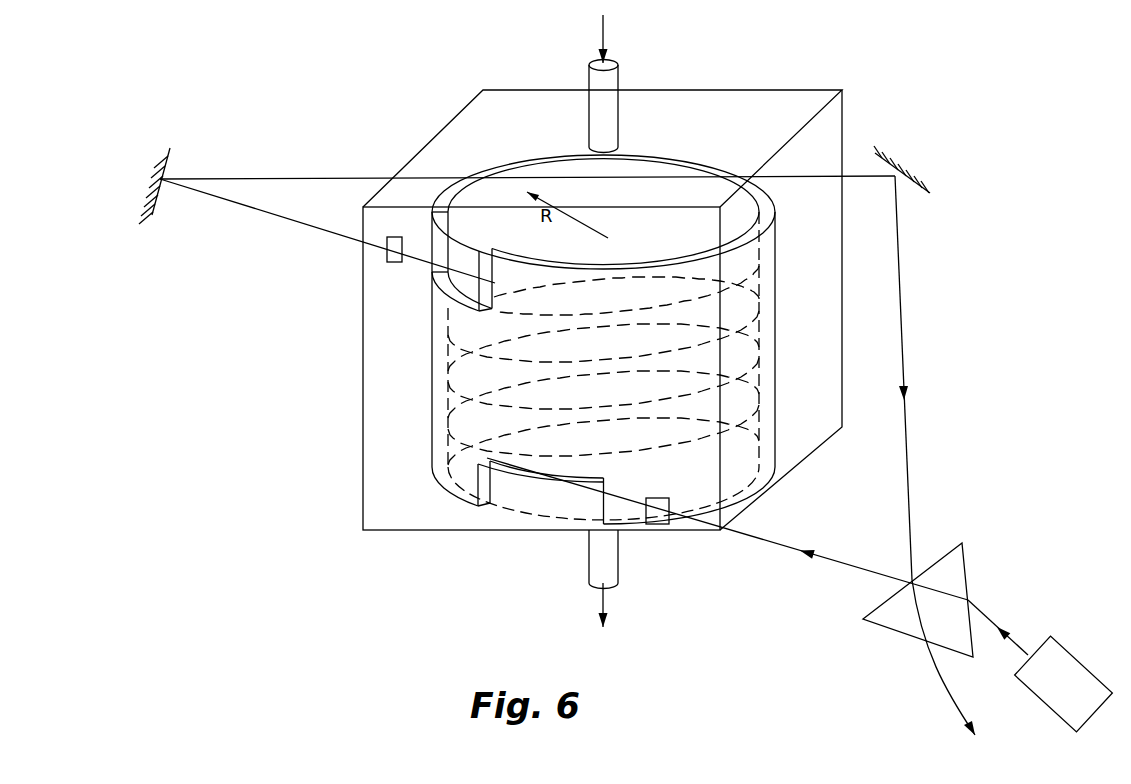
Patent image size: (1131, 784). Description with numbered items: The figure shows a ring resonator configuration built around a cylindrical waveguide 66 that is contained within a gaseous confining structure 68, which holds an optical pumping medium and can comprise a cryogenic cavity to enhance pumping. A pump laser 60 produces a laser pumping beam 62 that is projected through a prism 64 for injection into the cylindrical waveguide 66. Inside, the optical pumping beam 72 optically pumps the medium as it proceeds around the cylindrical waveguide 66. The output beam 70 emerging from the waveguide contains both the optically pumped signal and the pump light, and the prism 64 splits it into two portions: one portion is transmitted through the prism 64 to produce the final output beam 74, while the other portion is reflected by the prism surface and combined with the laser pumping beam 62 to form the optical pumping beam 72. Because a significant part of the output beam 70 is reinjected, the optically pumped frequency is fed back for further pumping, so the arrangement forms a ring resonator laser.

The pump laser 60 is at (1070, 650).
The laser pumping beam 62 is at (985, 608).
The prism 64 is at (965, 558).
The cylindrical waveguide 66 is at (430, 352).
The gaseous confining structure 68 is at (730, 90).
The output beam 70 is at (905, 287).
The optical pumping beam 72 is at (783, 550).
The final output beam 74 is at (947, 690).